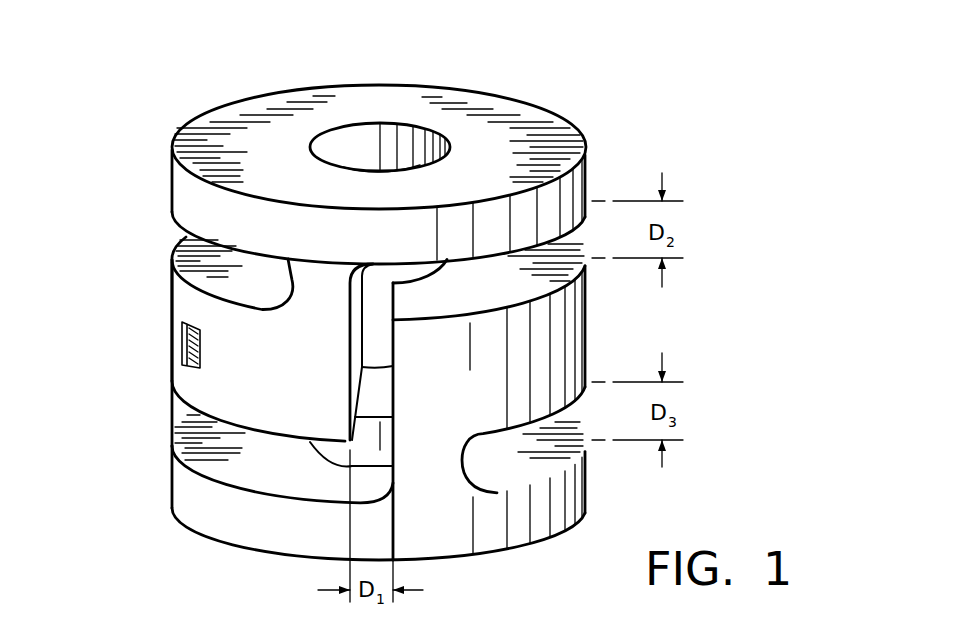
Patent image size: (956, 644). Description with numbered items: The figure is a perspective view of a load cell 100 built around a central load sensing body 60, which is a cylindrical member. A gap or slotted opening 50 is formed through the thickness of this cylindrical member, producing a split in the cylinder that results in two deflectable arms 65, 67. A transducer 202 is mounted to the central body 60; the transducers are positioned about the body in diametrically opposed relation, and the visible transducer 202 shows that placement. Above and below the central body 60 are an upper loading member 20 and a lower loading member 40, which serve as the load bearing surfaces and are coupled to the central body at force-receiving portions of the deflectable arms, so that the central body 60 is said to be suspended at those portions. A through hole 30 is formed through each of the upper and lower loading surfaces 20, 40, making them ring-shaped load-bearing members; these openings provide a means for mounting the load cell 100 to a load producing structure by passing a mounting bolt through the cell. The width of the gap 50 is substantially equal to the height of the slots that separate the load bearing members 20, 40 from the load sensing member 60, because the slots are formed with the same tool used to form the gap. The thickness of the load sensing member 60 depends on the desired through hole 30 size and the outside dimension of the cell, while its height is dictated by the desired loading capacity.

The load cell 100 is at (514, 46).
The upper loading member 20 is at (588, 183).
The through hole 30 is at (362, 146).
The central load sensing body 60 is at (590, 322).
The lower loading member 40 is at (590, 483).
The slotted opening 50 is at (370, 390).
The deflectable arm 65 is at (297, 357).
The deflectable arm 67 is at (431, 383).
The transducer 202 is at (182, 337).